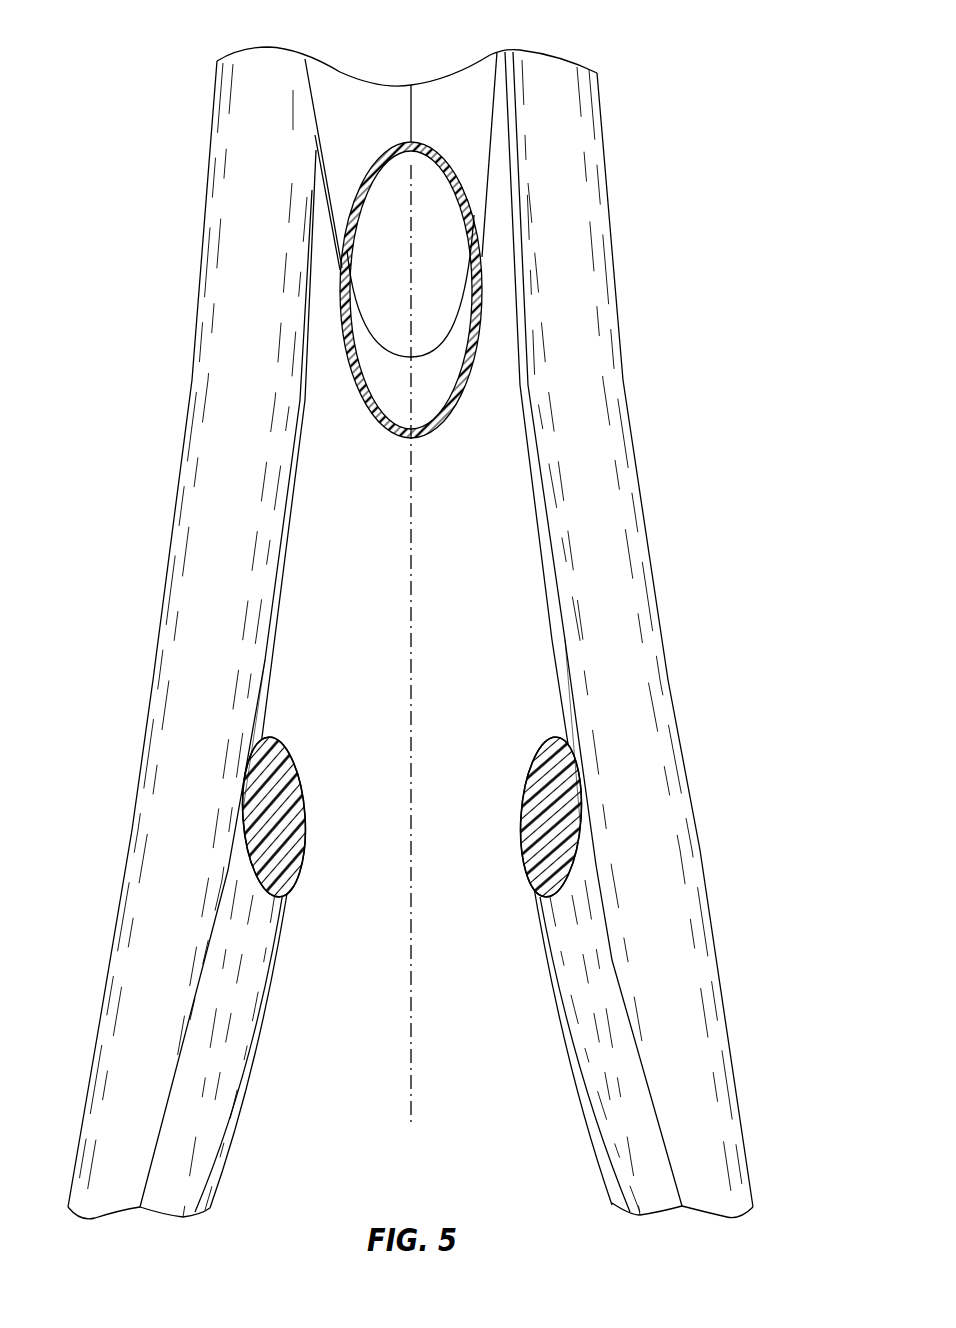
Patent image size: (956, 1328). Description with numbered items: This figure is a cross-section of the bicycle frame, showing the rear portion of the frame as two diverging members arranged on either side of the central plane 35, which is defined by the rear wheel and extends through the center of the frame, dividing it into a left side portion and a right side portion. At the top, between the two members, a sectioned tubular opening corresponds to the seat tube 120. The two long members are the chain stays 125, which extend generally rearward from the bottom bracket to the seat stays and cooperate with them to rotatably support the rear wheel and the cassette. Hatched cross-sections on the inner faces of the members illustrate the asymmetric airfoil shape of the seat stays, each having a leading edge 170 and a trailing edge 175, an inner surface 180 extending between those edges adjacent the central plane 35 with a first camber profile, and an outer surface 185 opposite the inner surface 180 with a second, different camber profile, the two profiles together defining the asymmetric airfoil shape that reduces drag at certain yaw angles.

The central plane 35 is at (415, 965).
The seat tube 120 is at (433, 142).
The chain stays 125 is at (203, 272).
The leading edge 170 is at (262, 740).
The trailing edge 175 is at (230, 1057).
The inner surface 180 is at (303, 803).
The outer surface 185 is at (242, 810).